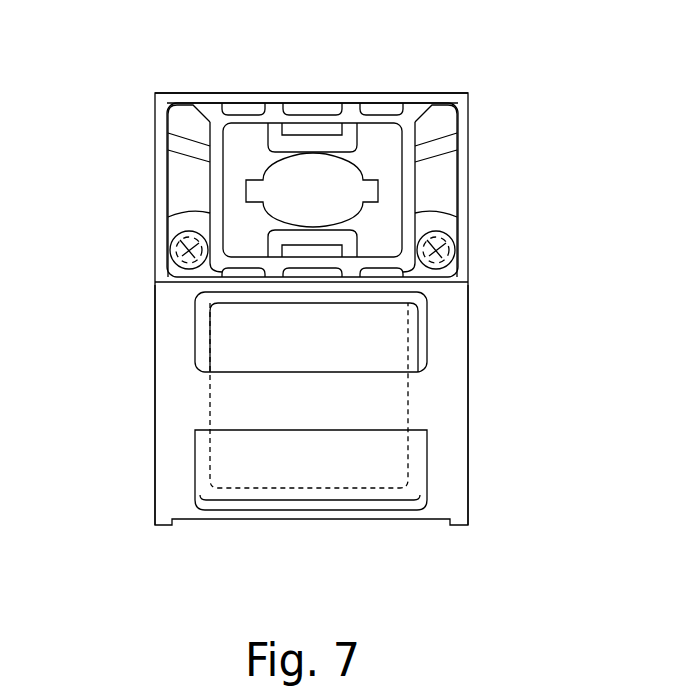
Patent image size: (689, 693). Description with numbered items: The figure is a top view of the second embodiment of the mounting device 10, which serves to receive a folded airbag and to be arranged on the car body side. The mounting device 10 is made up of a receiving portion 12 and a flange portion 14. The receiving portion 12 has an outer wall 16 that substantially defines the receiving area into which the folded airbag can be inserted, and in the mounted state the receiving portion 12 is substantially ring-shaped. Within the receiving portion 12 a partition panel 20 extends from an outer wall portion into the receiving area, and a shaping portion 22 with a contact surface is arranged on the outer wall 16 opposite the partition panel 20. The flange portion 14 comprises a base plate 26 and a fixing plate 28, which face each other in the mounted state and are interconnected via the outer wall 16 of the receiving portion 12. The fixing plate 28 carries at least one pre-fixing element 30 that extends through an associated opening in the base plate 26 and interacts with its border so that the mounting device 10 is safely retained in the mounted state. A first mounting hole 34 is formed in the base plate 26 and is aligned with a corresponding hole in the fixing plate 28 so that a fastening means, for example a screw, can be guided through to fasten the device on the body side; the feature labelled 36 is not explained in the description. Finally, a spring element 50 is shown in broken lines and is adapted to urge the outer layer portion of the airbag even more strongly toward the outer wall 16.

The mounting device 10 is at (476, 74).
The receiving portion 12 is at (150, 383).
The flange portion 14 is at (142, 172).
The outer wall 16 is at (437, 407).
The partition panel 20 is at (392, 345).
The shaping portion 22 is at (300, 405).
The base plate 26 is at (463, 162).
The fixing plate 28 is at (468, 93).
The pre-fixing element 30 is at (446, 243).
The first mounting hole 34 is at (268, 173).
The central bracket 36 is at (355, 173).
The spring element 50 is at (265, 488).